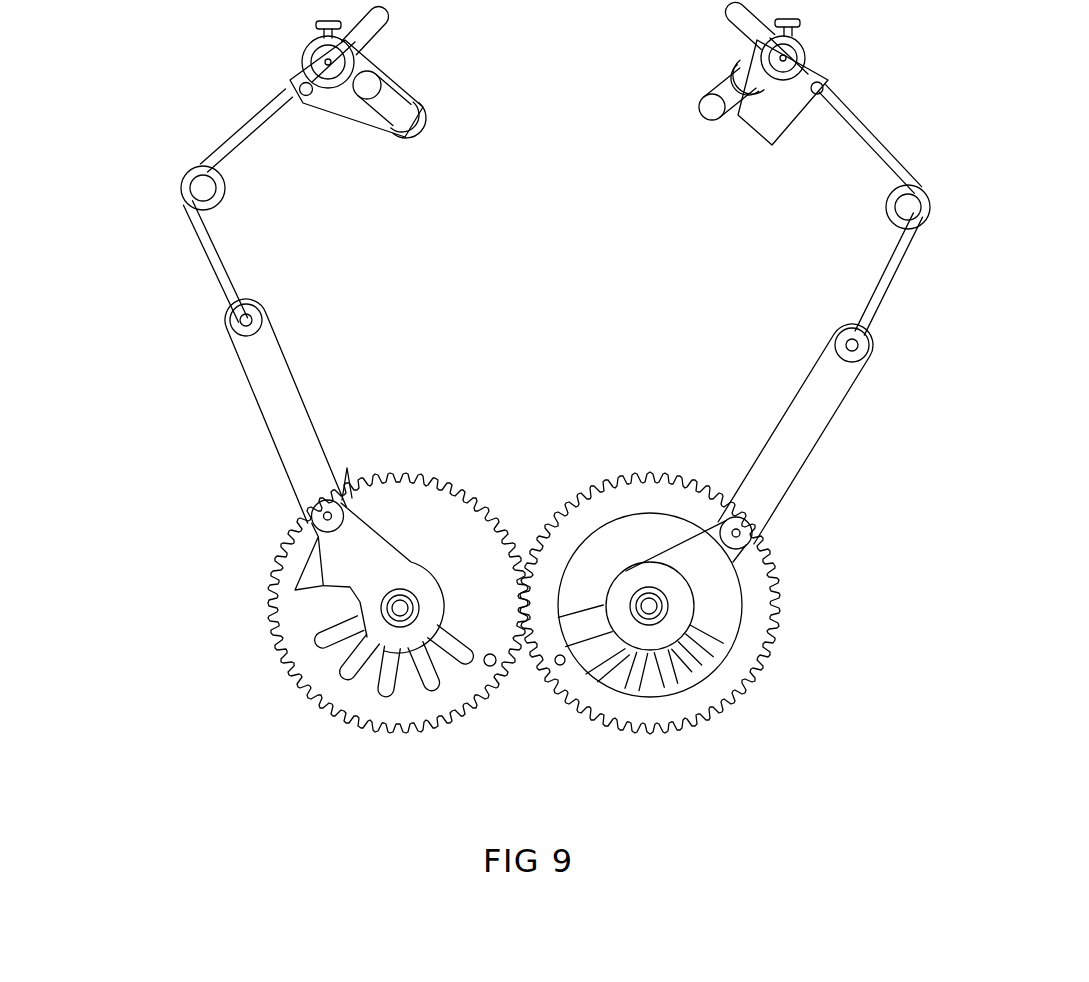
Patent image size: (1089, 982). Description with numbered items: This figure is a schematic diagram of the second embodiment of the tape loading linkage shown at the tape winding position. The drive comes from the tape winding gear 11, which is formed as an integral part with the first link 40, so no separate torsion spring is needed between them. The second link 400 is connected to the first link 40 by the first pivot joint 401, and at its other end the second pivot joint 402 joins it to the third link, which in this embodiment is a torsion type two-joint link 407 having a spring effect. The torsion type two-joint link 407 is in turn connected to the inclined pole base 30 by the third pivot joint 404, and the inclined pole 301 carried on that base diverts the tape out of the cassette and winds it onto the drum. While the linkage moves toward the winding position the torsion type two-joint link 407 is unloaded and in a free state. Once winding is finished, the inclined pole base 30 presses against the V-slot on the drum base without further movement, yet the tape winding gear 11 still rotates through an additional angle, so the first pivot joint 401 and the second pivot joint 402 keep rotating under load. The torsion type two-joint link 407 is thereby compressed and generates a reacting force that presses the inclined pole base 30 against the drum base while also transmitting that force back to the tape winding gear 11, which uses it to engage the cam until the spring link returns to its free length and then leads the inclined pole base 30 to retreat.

The tape winding gear 11 is at (670, 708).
The inclined pole base 30 is at (768, 128).
The inclined pole 301 is at (707, 112).
The first link 40 is at (685, 592).
The second link 400 is at (803, 437).
The first pivot joint 401 is at (745, 533).
The second pivot joint 402 is at (862, 345).
The third pivot joint 404 is at (826, 86).
The torsion type two-joint link 407 is at (908, 250).